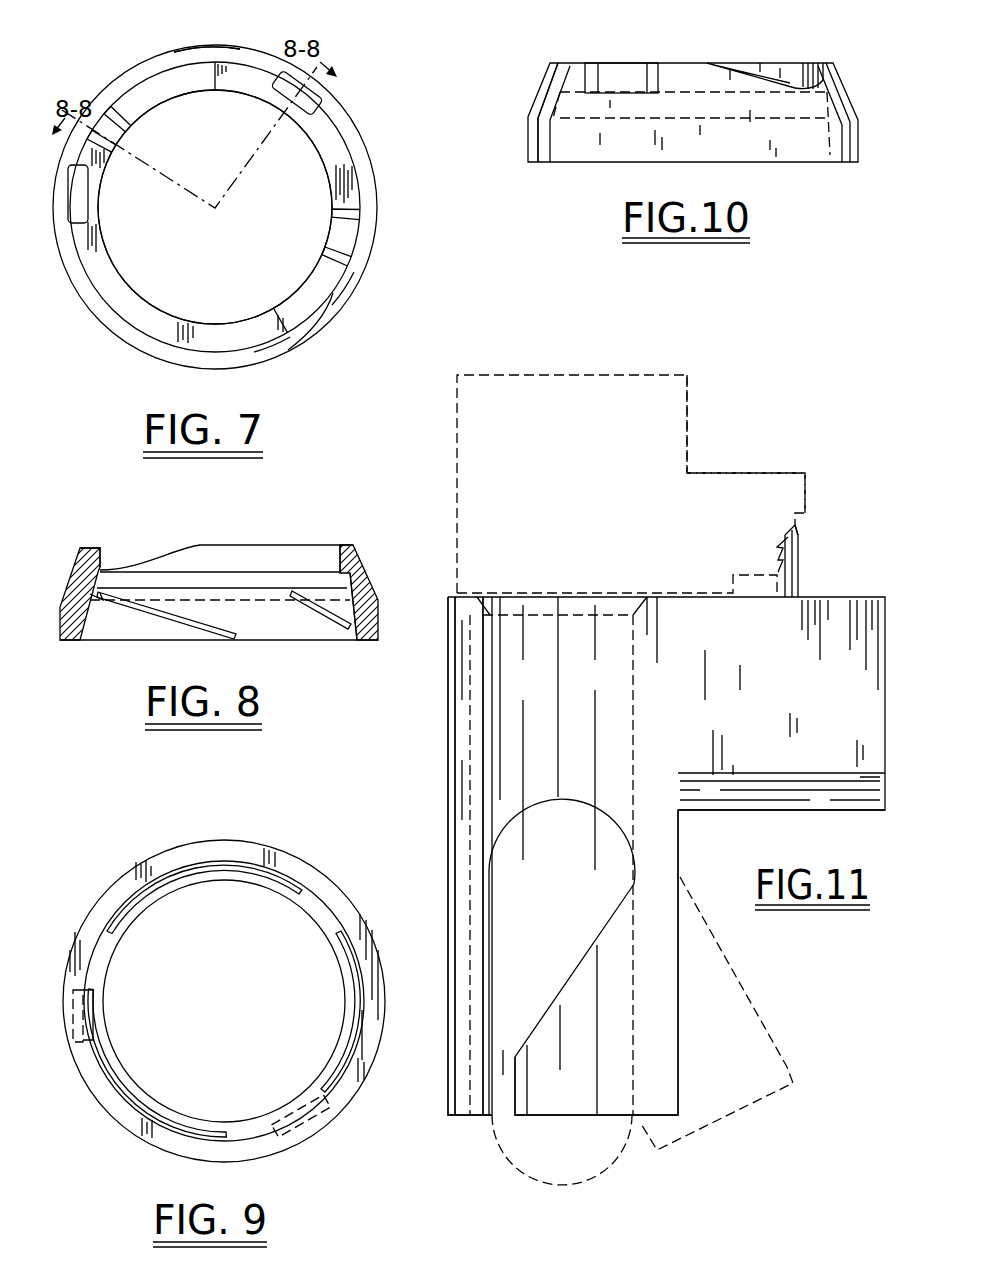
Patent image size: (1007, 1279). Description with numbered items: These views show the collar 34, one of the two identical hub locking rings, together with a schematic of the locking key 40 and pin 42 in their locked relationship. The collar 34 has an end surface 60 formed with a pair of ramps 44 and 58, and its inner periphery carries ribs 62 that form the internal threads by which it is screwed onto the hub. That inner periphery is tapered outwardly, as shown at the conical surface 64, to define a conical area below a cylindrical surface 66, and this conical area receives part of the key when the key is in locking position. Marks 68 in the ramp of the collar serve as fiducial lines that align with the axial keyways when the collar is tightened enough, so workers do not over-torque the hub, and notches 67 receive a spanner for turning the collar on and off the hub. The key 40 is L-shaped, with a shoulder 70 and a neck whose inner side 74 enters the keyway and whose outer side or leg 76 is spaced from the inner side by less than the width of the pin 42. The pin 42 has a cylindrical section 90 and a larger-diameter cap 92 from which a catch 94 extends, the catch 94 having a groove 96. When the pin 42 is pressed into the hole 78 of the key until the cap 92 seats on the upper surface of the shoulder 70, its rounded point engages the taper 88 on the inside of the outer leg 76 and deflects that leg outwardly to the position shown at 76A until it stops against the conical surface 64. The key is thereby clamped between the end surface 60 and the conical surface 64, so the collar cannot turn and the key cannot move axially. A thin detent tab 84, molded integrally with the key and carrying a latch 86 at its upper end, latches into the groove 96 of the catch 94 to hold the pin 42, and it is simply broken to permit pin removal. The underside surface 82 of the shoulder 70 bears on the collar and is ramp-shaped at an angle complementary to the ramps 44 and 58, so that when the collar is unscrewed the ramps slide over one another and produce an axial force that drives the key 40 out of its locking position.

In FIG. 7, the collar 34 is at (364, 170).
In FIG. 10, the collar 34 is at (858, 121).
In FIG. 8, the collar 34 is at (68, 643).
In FIG. 9, the collar 34 is at (98, 900).
In FIG. 11, the key 40 is at (440, 754).
In FIG. 11, the pin 42 is at (448, 484).
In FIG. 7, the ramp 44 is at (177, 83).
In FIG. 8, the ramp 44 is at (132, 562).
In FIG. 7, the ramp 58 is at (337, 304).
In FIG. 10, the ramp 58 is at (750, 63).
In FIG. 7, the end surface 60 is at (330, 140).
In FIG. 10, the end surface 60 is at (785, 63).
In FIG. 8, the end surface 60 is at (344, 546).
In FIG. 8, the ribs 62 is at (173, 623).
In FIG. 9, the ribs 62 is at (240, 880).
In FIG. 10, the conical surface 64 is at (565, 100).
In FIG. 8, the conical surface 64 is at (82, 563).
In FIG. 7, the cylindrical surface 66 is at (326, 166).
In FIG. 8, the cylindrical surface 66 is at (338, 562).
In FIG. 7, the notches 67 is at (318, 102).
In FIG. 10, the notches 67 is at (630, 78).
In FIG. 8, the notches 67 is at (362, 572).
In FIG. 7, the marks 68 is at (122, 110).
In FIG. 11, the shoulder 70 is at (843, 597).
In FIG. 11, the inner side 74 is at (464, 935).
In FIG. 11, the outer leg 76 is at (668, 1023).
In FIG. 11, the deflected position of outer leg 76A is at (760, 1020).
In FIG. 11, the hole 78 is at (837, 704).
In FIG. 11, the underside surface 82 is at (855, 797).
In FIG. 11, the detent tab 84 is at (798, 561).
In FIG. 11, the latch 86 is at (792, 527).
In FIG. 11, the taper 88 is at (585, 962).
In FIG. 11, the cylindrical section 90 is at (515, 1172).
In FIG. 11, the cap 92 is at (690, 418).
In FIG. 11, the catch 94 is at (763, 470).
In FIG. 11, the groove 96 is at (779, 545).